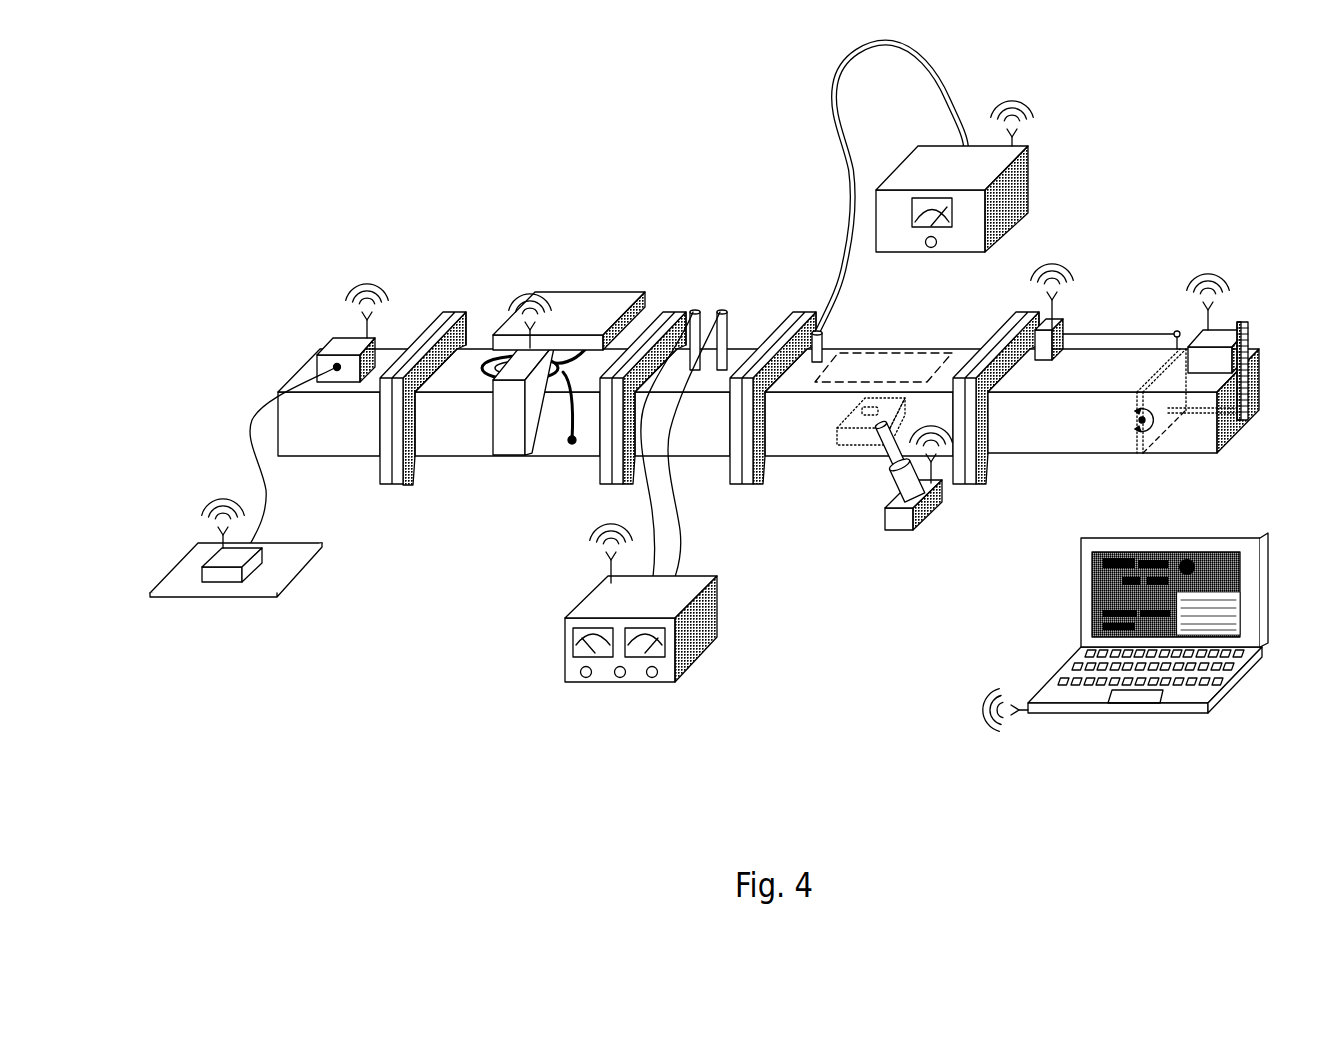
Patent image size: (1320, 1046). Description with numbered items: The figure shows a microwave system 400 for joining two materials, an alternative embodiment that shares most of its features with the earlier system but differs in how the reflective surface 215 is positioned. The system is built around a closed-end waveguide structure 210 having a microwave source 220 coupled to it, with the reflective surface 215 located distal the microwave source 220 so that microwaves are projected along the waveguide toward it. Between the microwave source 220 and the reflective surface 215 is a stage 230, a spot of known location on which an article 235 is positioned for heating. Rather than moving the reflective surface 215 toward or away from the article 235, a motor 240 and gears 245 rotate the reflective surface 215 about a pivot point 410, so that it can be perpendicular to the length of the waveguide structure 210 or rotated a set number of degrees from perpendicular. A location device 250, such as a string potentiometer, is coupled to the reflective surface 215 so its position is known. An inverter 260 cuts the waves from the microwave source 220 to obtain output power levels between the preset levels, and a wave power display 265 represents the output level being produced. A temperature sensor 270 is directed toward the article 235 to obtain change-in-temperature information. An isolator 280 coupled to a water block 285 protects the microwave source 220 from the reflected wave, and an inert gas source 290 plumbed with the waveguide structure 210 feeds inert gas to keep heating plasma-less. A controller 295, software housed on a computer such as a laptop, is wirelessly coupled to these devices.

The microwave system 400 is at (302, 152).
The waveguide structure 210 is at (288, 410).
The reflective surface 215 is at (1162, 423).
The microwave source 220 is at (333, 342).
The stage 230 is at (847, 435).
The article 235 is at (875, 407).
The motor 240 is at (1228, 338).
The gears 245 is at (1247, 413).
The location device 250 is at (1067, 315).
The inverter 260 is at (237, 557).
The wave power display 265 is at (700, 643).
The temperature sensor 270 is at (898, 523).
The isolator 280 is at (513, 443).
The water block 285 is at (587, 303).
The inert gas source 290 is at (1020, 167).
The controller 295 is at (1188, 705).
The pivot point 410 is at (1138, 432).